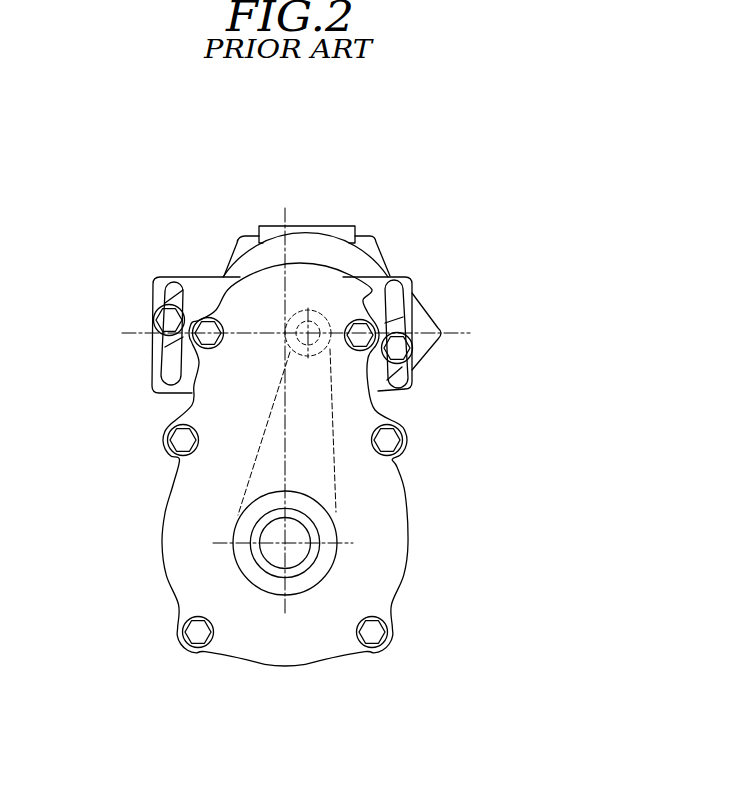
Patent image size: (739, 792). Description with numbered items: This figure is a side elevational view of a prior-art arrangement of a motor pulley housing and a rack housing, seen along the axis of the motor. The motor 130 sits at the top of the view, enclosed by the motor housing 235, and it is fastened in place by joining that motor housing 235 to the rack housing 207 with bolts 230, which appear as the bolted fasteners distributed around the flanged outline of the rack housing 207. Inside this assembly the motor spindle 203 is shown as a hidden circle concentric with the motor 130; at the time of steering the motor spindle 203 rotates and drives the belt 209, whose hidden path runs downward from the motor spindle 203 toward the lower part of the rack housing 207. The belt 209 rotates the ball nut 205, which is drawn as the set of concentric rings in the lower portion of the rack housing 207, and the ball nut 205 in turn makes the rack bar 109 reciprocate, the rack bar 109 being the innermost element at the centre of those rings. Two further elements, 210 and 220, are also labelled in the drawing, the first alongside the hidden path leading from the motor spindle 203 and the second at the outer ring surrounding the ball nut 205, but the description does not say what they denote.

The rack bar 109 is at (265, 532).
The motor 130 is at (365, 245).
The motor spindle 203 is at (298, 328).
The ball nut 205 is at (297, 570).
The rack housing 207 is at (397, 535).
The belt 209 is at (335, 483).
The passage 210 is at (283, 348).
The flange ring 220 is at (327, 553).
The bolts 230 is at (165, 318).
The motor housing 235 is at (305, 238).